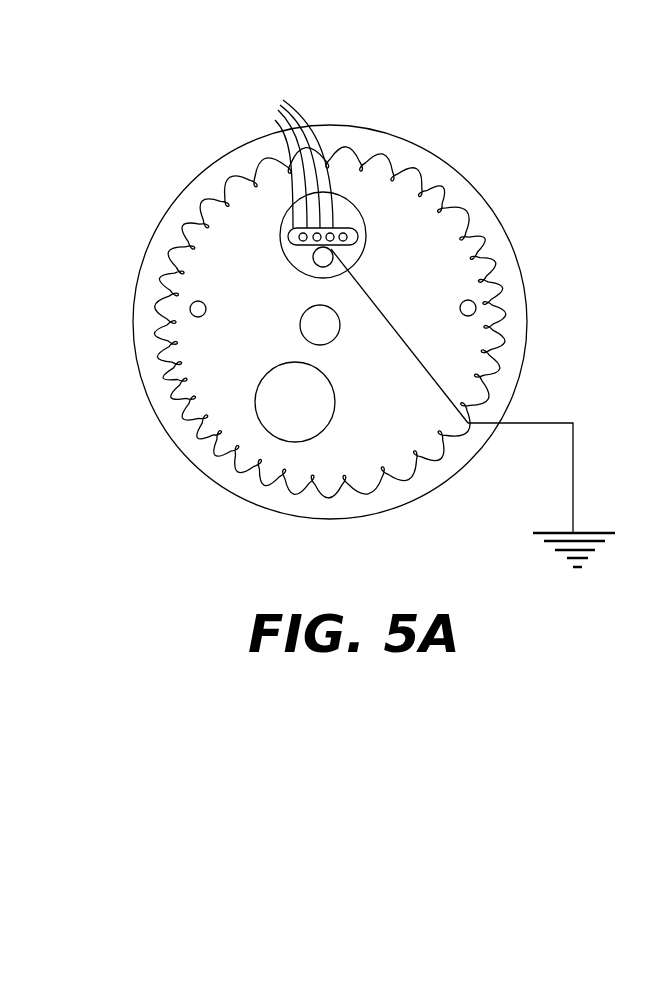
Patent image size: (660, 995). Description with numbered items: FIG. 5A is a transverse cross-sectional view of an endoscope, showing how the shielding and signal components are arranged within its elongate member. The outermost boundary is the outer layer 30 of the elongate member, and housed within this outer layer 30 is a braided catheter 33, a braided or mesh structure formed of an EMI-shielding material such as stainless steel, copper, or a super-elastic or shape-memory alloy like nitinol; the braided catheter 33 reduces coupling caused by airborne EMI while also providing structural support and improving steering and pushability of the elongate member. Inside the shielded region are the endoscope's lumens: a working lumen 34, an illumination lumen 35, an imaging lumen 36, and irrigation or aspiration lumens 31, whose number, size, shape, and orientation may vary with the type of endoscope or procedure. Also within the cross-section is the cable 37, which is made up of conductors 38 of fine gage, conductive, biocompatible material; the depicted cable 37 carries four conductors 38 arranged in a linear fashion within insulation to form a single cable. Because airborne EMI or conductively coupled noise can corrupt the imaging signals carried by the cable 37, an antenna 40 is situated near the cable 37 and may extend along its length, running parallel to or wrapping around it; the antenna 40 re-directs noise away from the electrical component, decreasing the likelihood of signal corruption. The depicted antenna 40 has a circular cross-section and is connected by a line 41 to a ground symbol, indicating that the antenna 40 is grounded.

The outer layer 30 is at (470, 180).
The irrigation or aspiration lumens 31 is at (190, 310).
The braided catheter 33 is at (255, 168).
The working lumen 34 is at (255, 415).
The illumination lumen 35 is at (300, 328).
The imaging lumen 36 is at (353, 202).
The cable 37 is at (288, 238).
The conductors 38 is at (289, 156).
The antenna 40 is at (314, 264).
The ground wire 41 is at (420, 355).